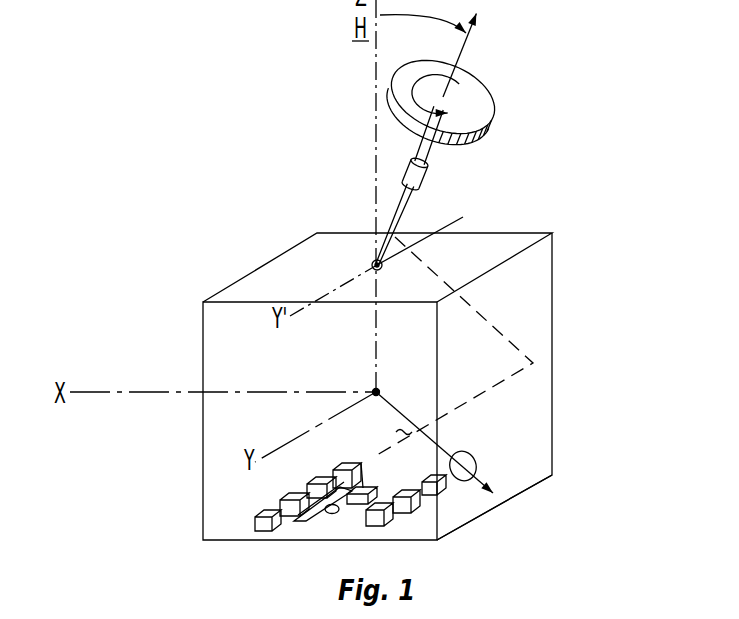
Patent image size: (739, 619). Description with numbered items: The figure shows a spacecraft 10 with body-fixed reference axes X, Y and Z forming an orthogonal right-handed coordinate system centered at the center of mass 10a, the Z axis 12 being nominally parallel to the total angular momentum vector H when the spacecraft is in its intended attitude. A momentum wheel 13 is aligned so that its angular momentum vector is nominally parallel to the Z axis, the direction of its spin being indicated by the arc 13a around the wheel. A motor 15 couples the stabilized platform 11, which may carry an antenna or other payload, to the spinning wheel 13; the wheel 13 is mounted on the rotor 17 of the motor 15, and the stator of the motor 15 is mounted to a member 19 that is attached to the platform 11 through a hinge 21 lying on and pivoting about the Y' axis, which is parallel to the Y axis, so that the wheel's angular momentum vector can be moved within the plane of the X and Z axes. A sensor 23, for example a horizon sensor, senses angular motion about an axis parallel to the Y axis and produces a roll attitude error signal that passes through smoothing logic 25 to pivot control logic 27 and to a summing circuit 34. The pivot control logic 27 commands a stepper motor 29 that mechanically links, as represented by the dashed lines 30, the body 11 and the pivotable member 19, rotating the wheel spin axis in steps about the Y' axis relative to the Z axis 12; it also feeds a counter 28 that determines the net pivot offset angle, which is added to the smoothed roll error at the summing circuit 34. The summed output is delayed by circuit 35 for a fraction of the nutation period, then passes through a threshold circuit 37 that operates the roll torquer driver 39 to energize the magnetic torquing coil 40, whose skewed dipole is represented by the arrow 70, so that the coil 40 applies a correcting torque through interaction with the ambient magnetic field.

The spacecraft 10 is at (561, 208).
The center of mass 10a is at (373, 391).
The stabilized platform 11 is at (537, 483).
The Z axis 12 is at (374, 194).
The momentum wheel 13 is at (483, 96).
The disc rotation direction 13a is at (431, 77).
The motor 15 is at (424, 182).
The rotor 17 is at (430, 150).
The member 19 is at (372, 262).
The hinge 21 is at (383, 269).
The sensor 23 is at (256, 523).
The smoothing logic 25 is at (282, 498).
The pivot control logic 27 is at (311, 481).
The counter 28 is at (361, 463).
The stepper motor 29 is at (346, 466).
The dashed lines 30 is at (498, 331).
The summing circuit 34 is at (334, 514).
The delay circuit 35 is at (390, 522).
The threshold circuit 37 is at (366, 488).
The roll torquer driver 39 is at (445, 493).
The magnetic torquing coil 40 is at (477, 464).
The arrow 70 is at (391, 430).